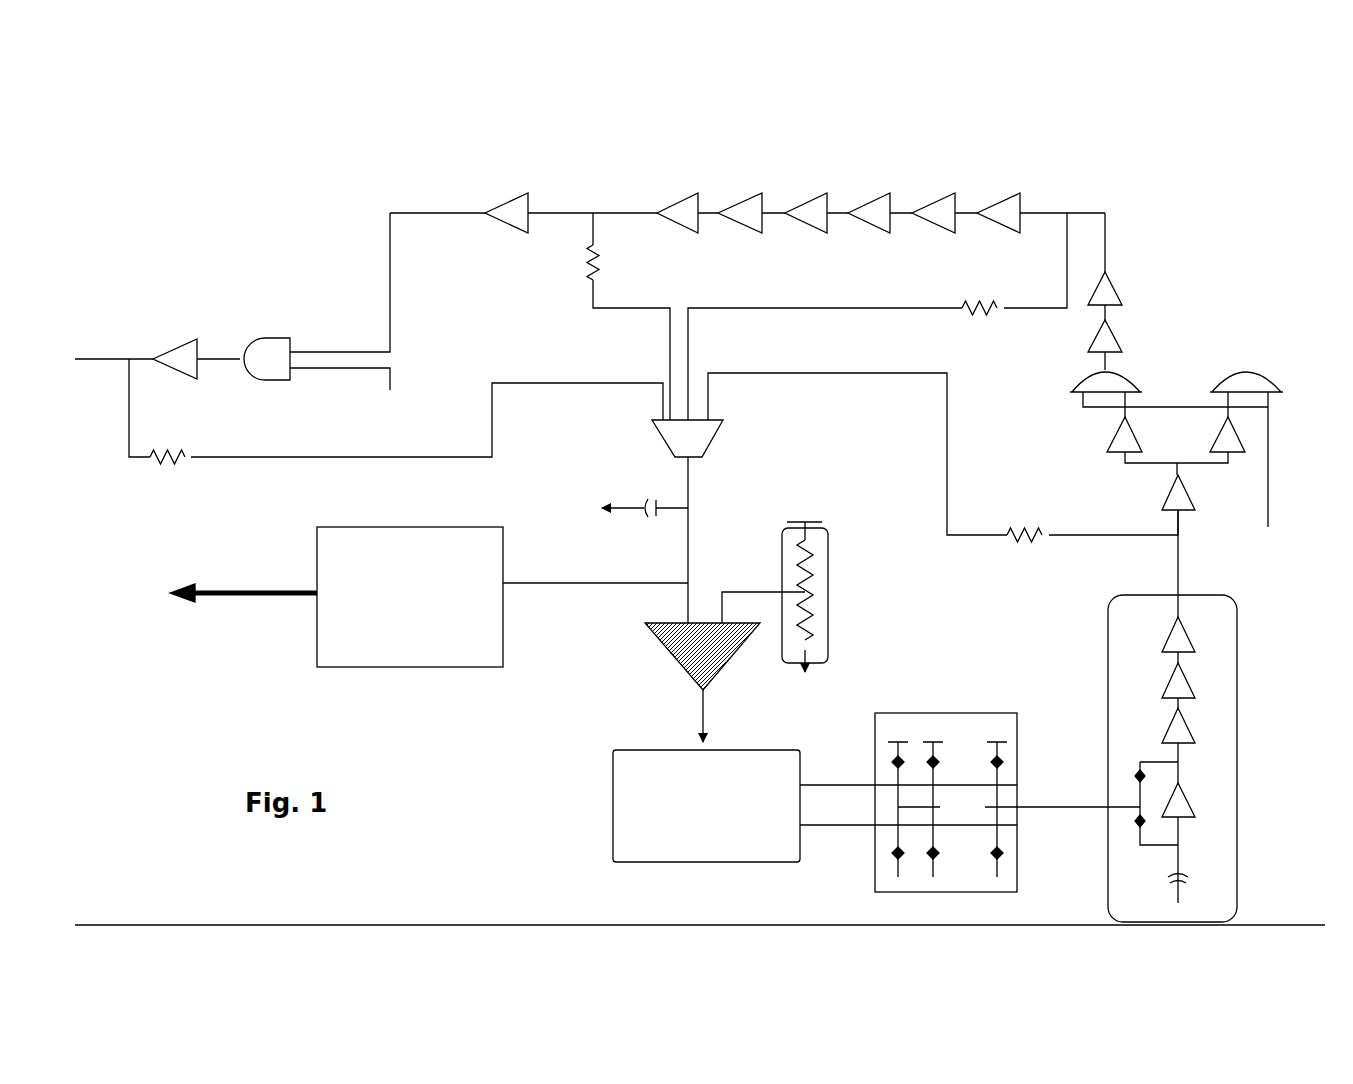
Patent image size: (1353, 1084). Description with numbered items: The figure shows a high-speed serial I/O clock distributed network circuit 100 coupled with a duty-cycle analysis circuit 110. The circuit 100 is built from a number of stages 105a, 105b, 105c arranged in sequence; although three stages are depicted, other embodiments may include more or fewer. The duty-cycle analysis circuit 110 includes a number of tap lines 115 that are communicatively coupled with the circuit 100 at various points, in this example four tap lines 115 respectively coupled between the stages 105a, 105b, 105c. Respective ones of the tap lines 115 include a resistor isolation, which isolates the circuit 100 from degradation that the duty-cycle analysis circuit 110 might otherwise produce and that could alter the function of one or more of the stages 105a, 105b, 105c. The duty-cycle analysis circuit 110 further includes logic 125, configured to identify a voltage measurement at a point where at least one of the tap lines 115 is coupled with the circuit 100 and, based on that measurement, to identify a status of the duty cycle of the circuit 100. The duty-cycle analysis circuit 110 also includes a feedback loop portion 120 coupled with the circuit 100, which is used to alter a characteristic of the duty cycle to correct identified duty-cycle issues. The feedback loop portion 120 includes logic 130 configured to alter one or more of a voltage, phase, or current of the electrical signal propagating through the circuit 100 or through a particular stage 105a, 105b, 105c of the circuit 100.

The high-speed serial I/O clock distributed network circuit 100 is at (224, 102).
The stage 105a is at (250, 266).
The stage 105b is at (770, 166).
The stage 105c is at (1212, 264).
The duty-cycle analysis circuit 110 is at (572, 699).
The tap lines 115 is at (592, 293).
The feedback loop portion 120 is at (680, 908).
The logic 125 is at (375, 663).
The logic 130 is at (612, 808).